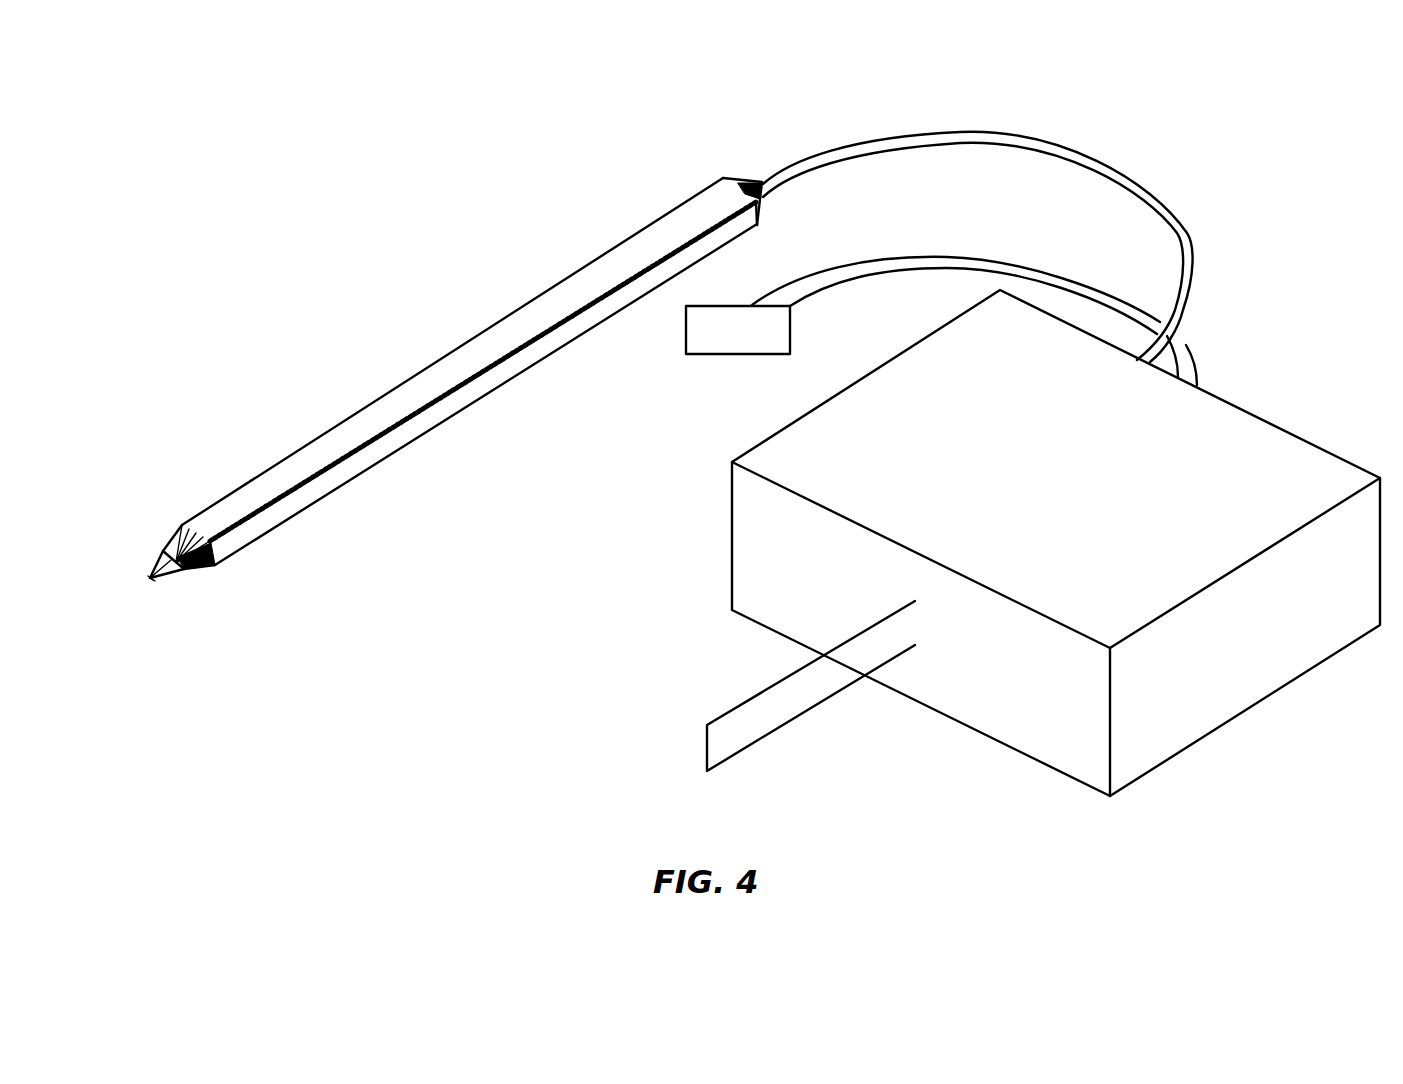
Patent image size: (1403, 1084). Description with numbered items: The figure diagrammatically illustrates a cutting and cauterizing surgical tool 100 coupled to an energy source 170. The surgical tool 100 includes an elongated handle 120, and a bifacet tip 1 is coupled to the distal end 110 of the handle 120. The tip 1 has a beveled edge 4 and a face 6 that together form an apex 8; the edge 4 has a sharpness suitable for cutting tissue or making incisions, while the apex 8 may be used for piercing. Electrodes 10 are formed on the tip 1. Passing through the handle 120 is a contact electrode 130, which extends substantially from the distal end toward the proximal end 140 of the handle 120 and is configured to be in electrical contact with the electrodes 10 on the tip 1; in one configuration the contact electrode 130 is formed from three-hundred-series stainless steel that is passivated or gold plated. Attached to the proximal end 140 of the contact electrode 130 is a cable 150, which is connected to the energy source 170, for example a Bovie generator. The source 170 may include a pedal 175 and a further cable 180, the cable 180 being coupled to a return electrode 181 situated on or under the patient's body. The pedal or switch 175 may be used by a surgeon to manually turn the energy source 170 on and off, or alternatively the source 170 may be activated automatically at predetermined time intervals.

The cutting and cauterizing surgical tool 100 is at (697, 158).
The distal end 110 is at (176, 524).
The handle 120 is at (306, 454).
The contact electrode 130 is at (499, 364).
The proximal end 140 is at (764, 200).
The cable 150 is at (1050, 150).
The energy source 170 is at (1270, 442).
The pedal 175 is at (765, 706).
The cable 180 is at (988, 262).
The return electrode 181 is at (709, 358).
The electrodes 10 is at (198, 570).
The beveled edge 4 is at (152, 566).
The apex 8 is at (150, 580).
The face 6 is at (156, 582).
The bifacet tip 1 is at (158, 577).